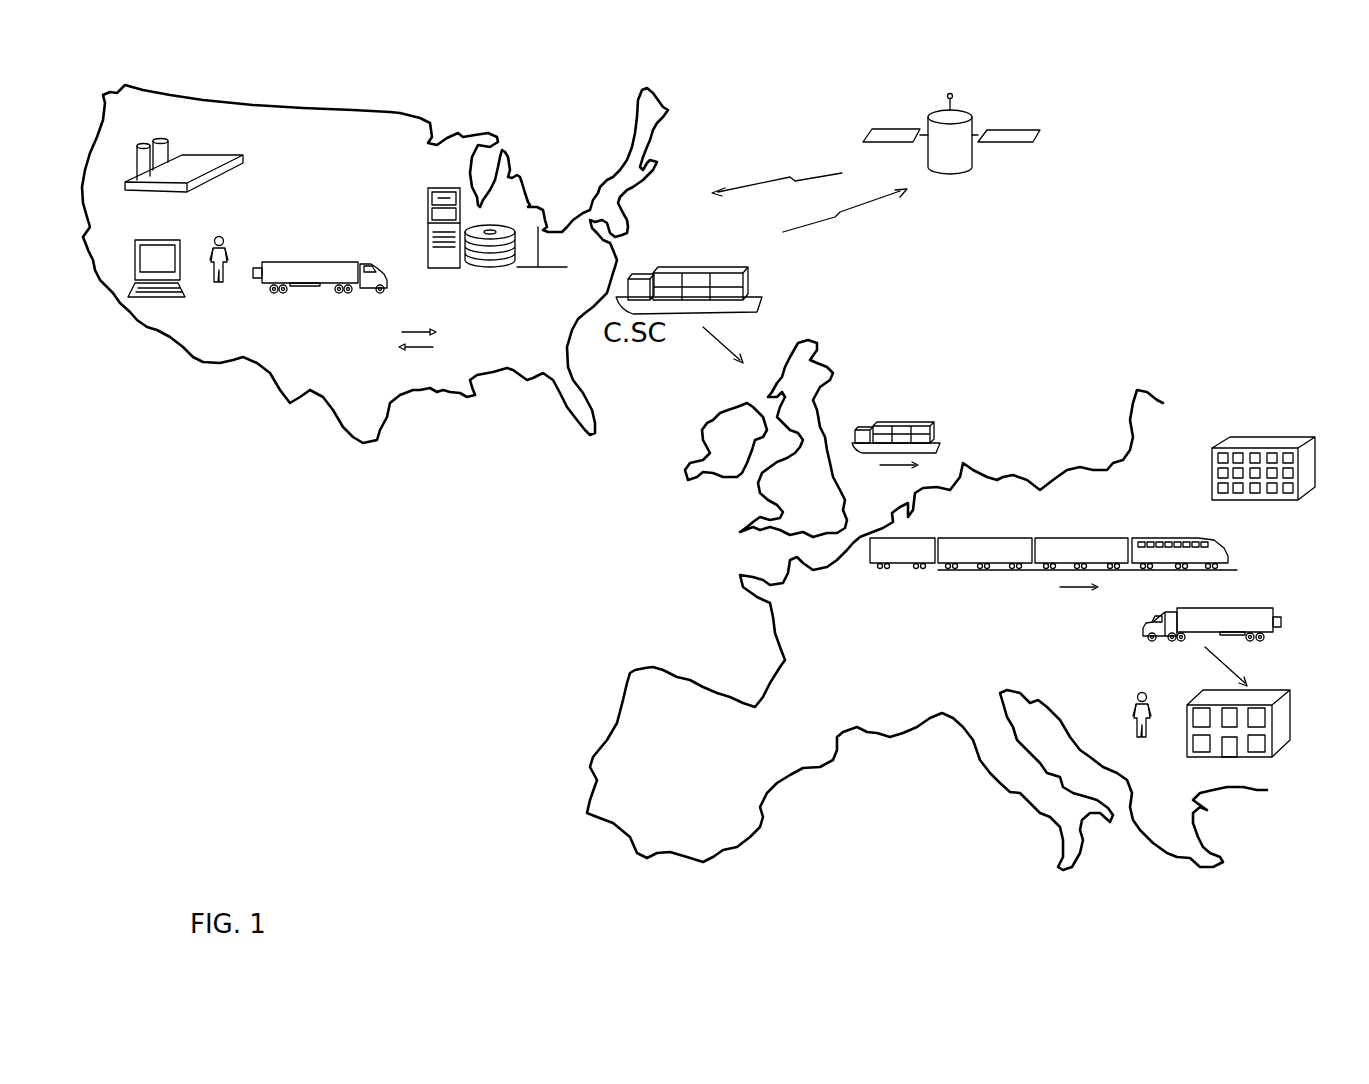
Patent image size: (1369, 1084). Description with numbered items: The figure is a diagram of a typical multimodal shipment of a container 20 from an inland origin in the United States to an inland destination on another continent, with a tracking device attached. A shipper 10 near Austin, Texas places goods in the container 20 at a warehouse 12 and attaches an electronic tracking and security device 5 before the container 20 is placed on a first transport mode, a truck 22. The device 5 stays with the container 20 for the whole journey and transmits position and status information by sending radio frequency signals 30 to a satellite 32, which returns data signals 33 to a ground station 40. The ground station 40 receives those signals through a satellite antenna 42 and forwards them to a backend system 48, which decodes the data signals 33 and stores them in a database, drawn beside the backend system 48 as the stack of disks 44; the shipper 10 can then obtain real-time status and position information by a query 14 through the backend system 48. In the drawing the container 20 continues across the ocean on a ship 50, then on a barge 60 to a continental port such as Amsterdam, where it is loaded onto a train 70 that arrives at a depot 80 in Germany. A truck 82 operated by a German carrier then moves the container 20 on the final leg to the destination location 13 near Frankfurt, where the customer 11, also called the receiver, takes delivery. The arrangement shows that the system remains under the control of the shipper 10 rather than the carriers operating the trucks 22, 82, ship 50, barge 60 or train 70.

The electronic tracking and security device 5 is at (253, 275).
The shipper 10 is at (223, 238).
The customer 11 is at (1137, 695).
The warehouse 12 is at (243, 160).
The destination location 13 is at (1243, 757).
The query 14 is at (128, 287).
The container 20 is at (327, 261).
The truck 22 is at (393, 283).
The radio frequency signals 30 is at (867, 208).
The satellite 32 is at (977, 153).
The data signals 33 is at (813, 177).
The ground station 40 is at (347, 374).
The satellite antenna 42 is at (567, 267).
The database / storage 44 is at (503, 267).
The backend system 48 is at (428, 207).
The ship 50 is at (762, 303).
The barge 60 is at (947, 448).
The train 70 is at (1017, 570).
The depot 80 is at (1265, 437).
The truck 82 is at (1143, 627).